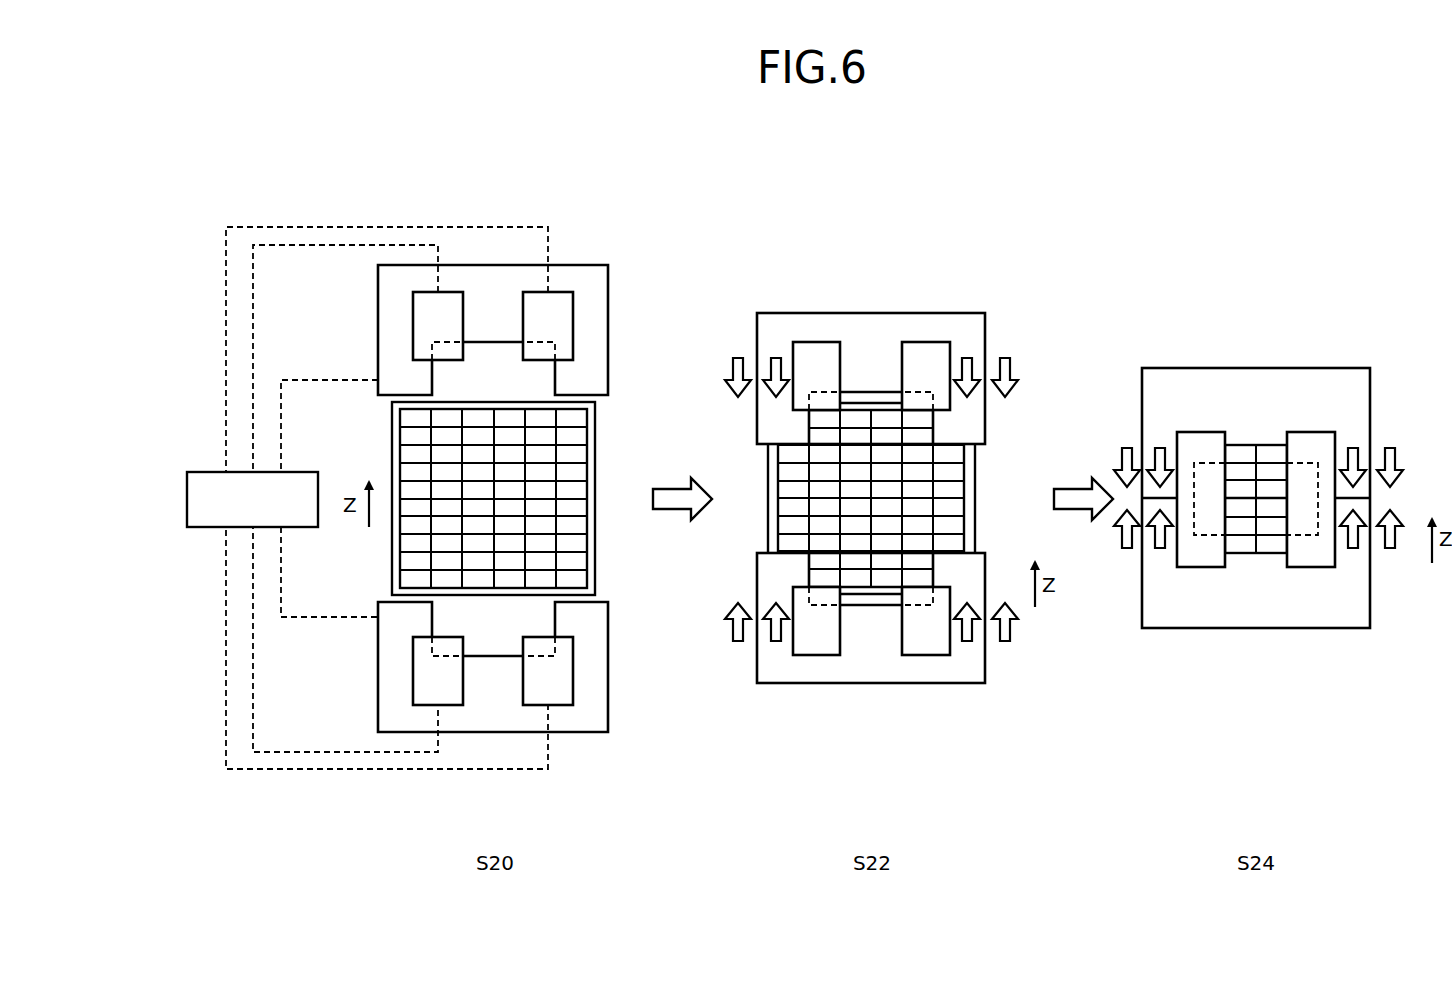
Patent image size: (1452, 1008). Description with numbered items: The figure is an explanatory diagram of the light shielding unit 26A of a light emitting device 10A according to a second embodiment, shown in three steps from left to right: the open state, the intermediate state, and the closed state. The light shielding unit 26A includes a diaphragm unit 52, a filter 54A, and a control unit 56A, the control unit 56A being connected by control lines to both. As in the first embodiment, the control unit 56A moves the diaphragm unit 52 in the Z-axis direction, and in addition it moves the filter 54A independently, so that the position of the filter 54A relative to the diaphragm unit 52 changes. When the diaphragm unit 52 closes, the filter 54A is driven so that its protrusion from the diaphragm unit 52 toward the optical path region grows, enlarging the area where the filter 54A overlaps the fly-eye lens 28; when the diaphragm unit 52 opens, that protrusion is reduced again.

The light emitting device 10A is at (350, 185).
The light shielding unit 26A is at (202, 258).
The fly-eye lens 28 is at (592, 457).
The diaphragm unit 52 is at (592, 332).
The filter 54A is at (450, 304).
The control unit 56A is at (296, 472).